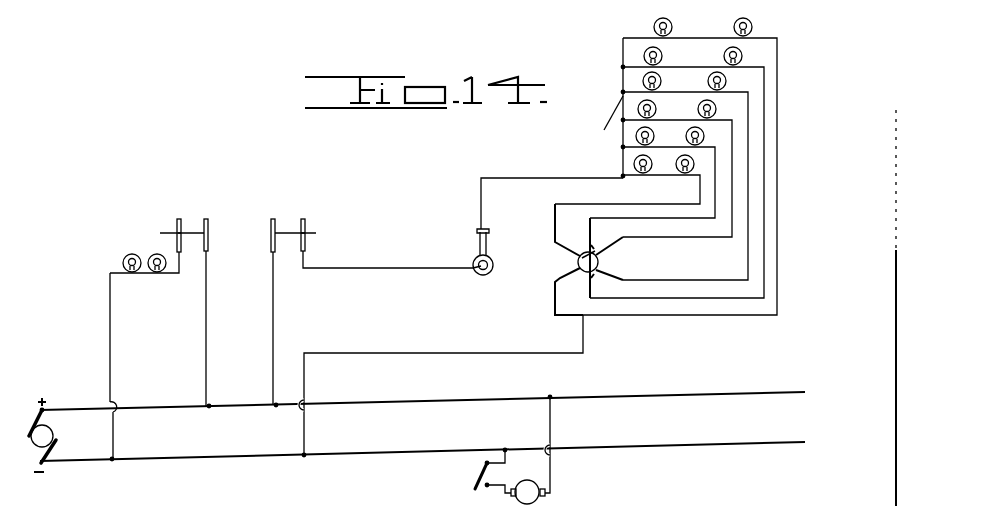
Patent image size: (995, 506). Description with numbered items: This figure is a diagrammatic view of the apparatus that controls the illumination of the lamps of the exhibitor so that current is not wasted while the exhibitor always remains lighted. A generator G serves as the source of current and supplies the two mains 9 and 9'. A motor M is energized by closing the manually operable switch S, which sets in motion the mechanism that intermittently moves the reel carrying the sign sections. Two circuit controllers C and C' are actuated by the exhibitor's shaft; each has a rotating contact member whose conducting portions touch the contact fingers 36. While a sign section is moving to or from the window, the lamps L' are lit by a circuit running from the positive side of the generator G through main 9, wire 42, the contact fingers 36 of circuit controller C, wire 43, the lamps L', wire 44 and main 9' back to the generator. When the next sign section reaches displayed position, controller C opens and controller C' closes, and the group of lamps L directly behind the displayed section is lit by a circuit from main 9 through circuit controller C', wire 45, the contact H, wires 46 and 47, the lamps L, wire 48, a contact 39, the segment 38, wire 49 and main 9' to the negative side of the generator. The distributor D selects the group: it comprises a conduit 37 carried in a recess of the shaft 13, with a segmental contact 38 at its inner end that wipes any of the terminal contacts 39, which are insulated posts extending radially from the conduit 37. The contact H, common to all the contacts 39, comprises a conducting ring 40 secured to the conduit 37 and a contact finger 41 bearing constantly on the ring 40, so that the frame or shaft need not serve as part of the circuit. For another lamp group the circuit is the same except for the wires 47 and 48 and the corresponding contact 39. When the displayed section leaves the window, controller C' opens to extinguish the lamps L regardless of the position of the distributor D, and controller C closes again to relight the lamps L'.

The main 9 is at (422, 407).
The main 9' is at (422, 445).
The shaft 13 is at (479, 272).
The contact fingers 36 is at (170, 230).
The conduit 37 is at (574, 268).
The segmental contact 38 is at (600, 257).
The terminal contacts 39 is at (580, 248).
The conducting ring 40 is at (491, 270).
The contact finger 41 is at (490, 238).
The wire 42 is at (212, 381).
The wire 43 is at (170, 276).
The wire 44 is at (108, 333).
The wire 45 is at (370, 270).
The wire 46 is at (512, 180).
The wire 47 is at (622, 146).
The wire 48 is at (729, 120).
The wire 49 is at (584, 333).
The lamps L is at (693, 107).
The lamps L' is at (127, 256).
The circuit controller C is at (184, 222).
The circuit controller C' is at (293, 220).
The distributor D is at (576, 262).
The contact H is at (478, 258).
The generator G is at (33, 446).
The switch S is at (474, 478).
The motor M is at (540, 500).